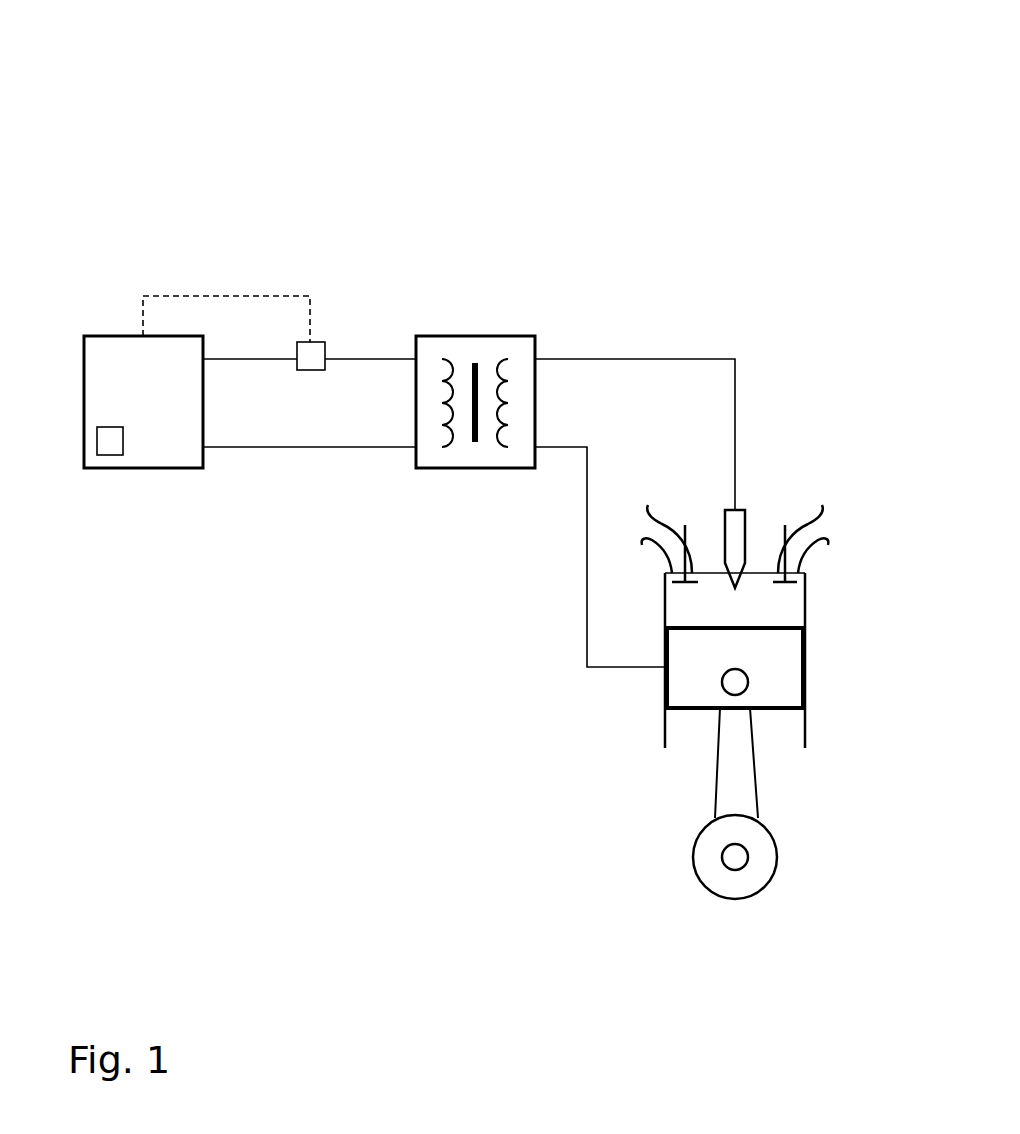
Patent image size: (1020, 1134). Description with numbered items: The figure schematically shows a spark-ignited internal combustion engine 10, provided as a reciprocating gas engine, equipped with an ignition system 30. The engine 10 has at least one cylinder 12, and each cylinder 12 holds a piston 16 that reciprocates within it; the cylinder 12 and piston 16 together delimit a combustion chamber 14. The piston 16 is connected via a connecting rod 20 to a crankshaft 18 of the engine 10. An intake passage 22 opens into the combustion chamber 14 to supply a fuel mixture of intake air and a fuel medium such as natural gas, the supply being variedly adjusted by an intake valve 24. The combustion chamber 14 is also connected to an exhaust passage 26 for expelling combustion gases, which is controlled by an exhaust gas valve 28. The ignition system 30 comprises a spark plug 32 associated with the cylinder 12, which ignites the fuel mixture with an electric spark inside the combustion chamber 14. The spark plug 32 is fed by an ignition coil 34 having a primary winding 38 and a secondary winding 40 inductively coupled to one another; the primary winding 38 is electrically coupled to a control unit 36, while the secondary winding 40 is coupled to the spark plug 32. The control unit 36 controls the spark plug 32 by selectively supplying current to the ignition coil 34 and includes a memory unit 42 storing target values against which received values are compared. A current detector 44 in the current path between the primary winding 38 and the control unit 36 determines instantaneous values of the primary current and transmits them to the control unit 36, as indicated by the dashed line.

The internal combustion engine 10 is at (740, 107).
The cylinder 12 is at (713, 674).
The combustion chamber 14 is at (797, 600).
The piston 16 is at (790, 678).
The crankshaft 18 is at (695, 872).
The connecting rod 20 is at (735, 768).
The intake passage 22 is at (667, 548).
The intake valve 24 is at (684, 530).
The exhaust passage 26 is at (803, 550).
The exhaust gas valve 28 is at (783, 527).
The ignition system 30 is at (192, 168).
The spark plug 32 is at (727, 513).
The ignition coil 34 is at (468, 341).
The control unit 36 is at (118, 333).
The primary winding 38 is at (433, 360).
The secondary winding 40 is at (503, 360).
The memory unit 42 is at (115, 442).
The current detector 44 is at (315, 350).